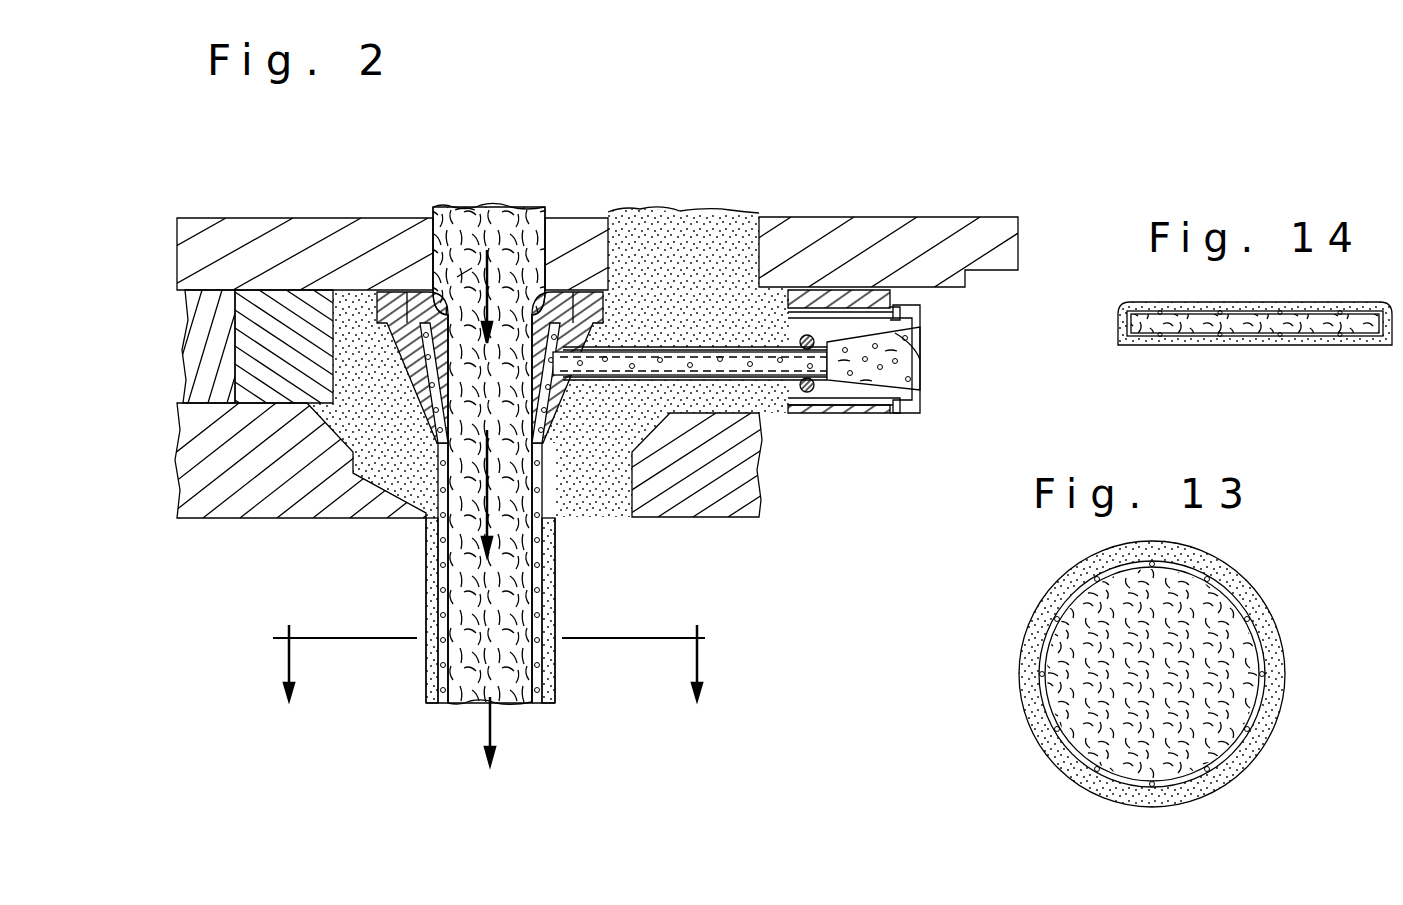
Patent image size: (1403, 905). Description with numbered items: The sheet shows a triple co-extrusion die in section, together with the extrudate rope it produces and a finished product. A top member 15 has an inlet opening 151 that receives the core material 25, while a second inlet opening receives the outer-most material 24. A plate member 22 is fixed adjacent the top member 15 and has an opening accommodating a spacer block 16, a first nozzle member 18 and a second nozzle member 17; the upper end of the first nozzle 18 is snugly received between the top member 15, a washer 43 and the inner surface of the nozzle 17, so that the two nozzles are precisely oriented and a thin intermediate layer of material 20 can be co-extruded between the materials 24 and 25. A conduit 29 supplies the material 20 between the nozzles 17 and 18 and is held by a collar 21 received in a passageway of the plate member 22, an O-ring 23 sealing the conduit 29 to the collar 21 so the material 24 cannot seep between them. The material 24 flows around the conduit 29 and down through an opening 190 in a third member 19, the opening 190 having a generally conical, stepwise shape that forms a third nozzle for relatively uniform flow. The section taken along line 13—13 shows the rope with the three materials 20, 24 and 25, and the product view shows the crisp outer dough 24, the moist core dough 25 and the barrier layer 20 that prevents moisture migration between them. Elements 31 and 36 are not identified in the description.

In FIG. 2, the section line 13— 13 is at (490, 652).
In FIG. 2, the top member 15 is at (233, 230).
In FIG. 2, the spacer block 16 is at (288, 315).
In FIG. 2, the second nozzle member 17 is at (390, 300).
In FIG. 2, the first nozzle member 18 is at (557, 287).
In FIG. 2, the third member 19 is at (228, 508).
In FIG. 2, the intermediate barrier material 20 is at (905, 374).
In FIG. 13, the intermediate barrier material 20 is at (1073, 755).
In FIG. 14, the intermediate barrier material 20 is at (1322, 335).
In FIG. 2, the connecting collar 21 is at (920, 322).
In FIG. 2, the plate member 22 is at (200, 335).
In FIG. 2, the O-ring 23 is at (807, 335).
In FIG. 2, the outer-most material 24 is at (727, 220).
In FIG. 13, the outer-most material 24 is at (1125, 790).
In FIG. 14, the outer-most material 24 is at (1258, 342).
In FIG. 2, the core material 25 is at (503, 215).
In FIG. 13, the core material 25 is at (1082, 692).
In FIG. 14, the core material 25 is at (1183, 328).
In FIG. 2, the conduit 29 is at (735, 307).
In FIG. 2, the collar opening 31 is at (397, 300).
In FIG. 2, the horizontal perforated tube 36 is at (921, 360).
In FIG. 2, the washer 43 is at (465, 215).
In FIG. 2, the inlet opening 151 is at (458, 277).
In FIG. 2, the opening 190 is at (387, 473).